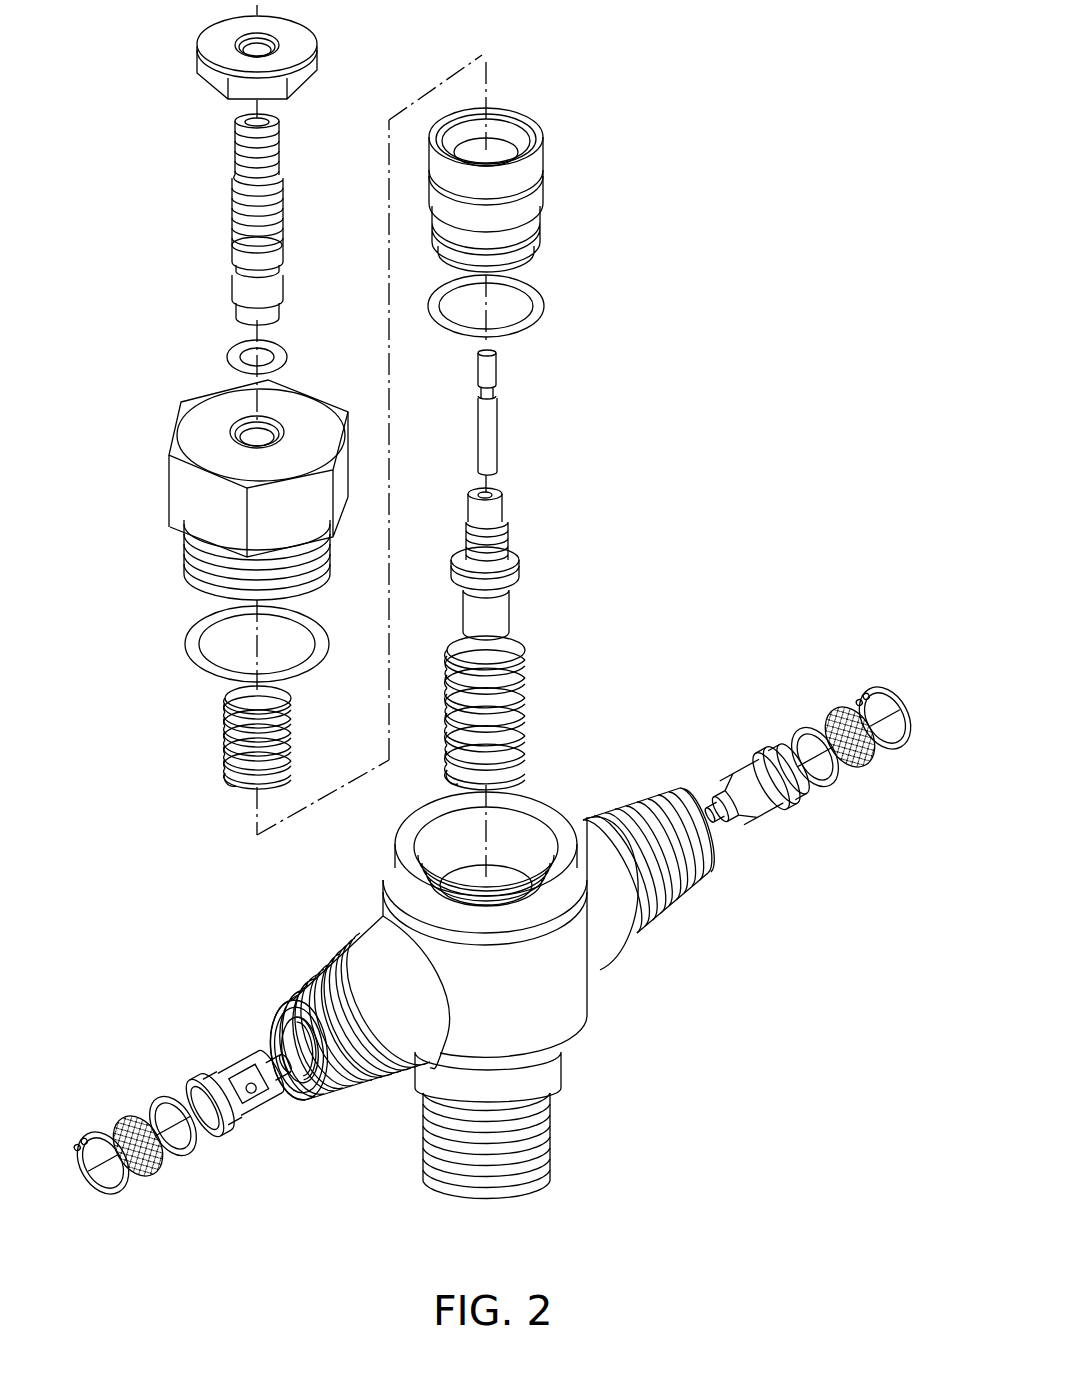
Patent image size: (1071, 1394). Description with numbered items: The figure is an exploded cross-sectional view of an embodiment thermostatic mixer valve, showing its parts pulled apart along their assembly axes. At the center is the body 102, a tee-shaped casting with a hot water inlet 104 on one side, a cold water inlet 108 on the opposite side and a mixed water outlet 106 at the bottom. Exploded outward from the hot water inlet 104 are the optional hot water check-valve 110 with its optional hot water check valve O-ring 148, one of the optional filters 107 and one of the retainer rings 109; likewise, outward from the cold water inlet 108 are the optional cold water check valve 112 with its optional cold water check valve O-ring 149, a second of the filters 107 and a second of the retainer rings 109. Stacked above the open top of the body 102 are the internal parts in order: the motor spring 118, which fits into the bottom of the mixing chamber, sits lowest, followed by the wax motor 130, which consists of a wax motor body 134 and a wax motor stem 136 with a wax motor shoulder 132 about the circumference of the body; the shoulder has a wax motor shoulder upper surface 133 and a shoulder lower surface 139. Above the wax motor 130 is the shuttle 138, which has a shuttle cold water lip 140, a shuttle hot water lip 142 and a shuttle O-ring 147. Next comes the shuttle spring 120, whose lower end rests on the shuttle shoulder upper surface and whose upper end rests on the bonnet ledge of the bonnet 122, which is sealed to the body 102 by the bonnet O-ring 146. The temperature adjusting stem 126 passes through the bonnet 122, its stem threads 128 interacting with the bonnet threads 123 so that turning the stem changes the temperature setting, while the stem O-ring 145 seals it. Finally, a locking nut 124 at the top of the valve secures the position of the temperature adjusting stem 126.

The body 102 is at (385, 920).
The hot water inlet 104 is at (265, 1022).
The mixed water outlet 106 is at (467, 1200).
The filters 107 is at (858, 768).
The cold water inlet 108 is at (697, 800).
The retainer rings 109 is at (866, 685).
The hot water check-valve 110 is at (202, 1073).
The cold water check valve 112 is at (765, 818).
The motor spring 118 is at (527, 715).
The shuttle spring 120 is at (226, 740).
The bonnet 122 is at (224, 475).
The bonnet threads 123 is at (248, 413).
The locking nut 124 is at (197, 62).
The temperature adjusting stem 126 is at (232, 238).
The stem threads 128 is at (233, 128).
The wax motor 130 is at (503, 572).
The wax motor shoulder 132 is at (521, 568).
The wax motor shoulder upper surface 133 is at (507, 560).
The wax motor body 134 is at (508, 602).
The wax motor stem 136 is at (498, 414).
The shuttle 138 is at (521, 171).
The shuttle shoulder lower surface 139 is at (460, 592).
The shuttle cold water lip 140 is at (522, 115).
The shuttle hot water lip 142 is at (534, 262).
The stem O-ring 145 is at (287, 355).
The bonnet O-ring 146 is at (187, 645).
The shuttle O-ring 147 is at (546, 307).
The hot water check valve O-ring 148 is at (180, 1150).
The cold water check valve O-ring 149 is at (802, 728).